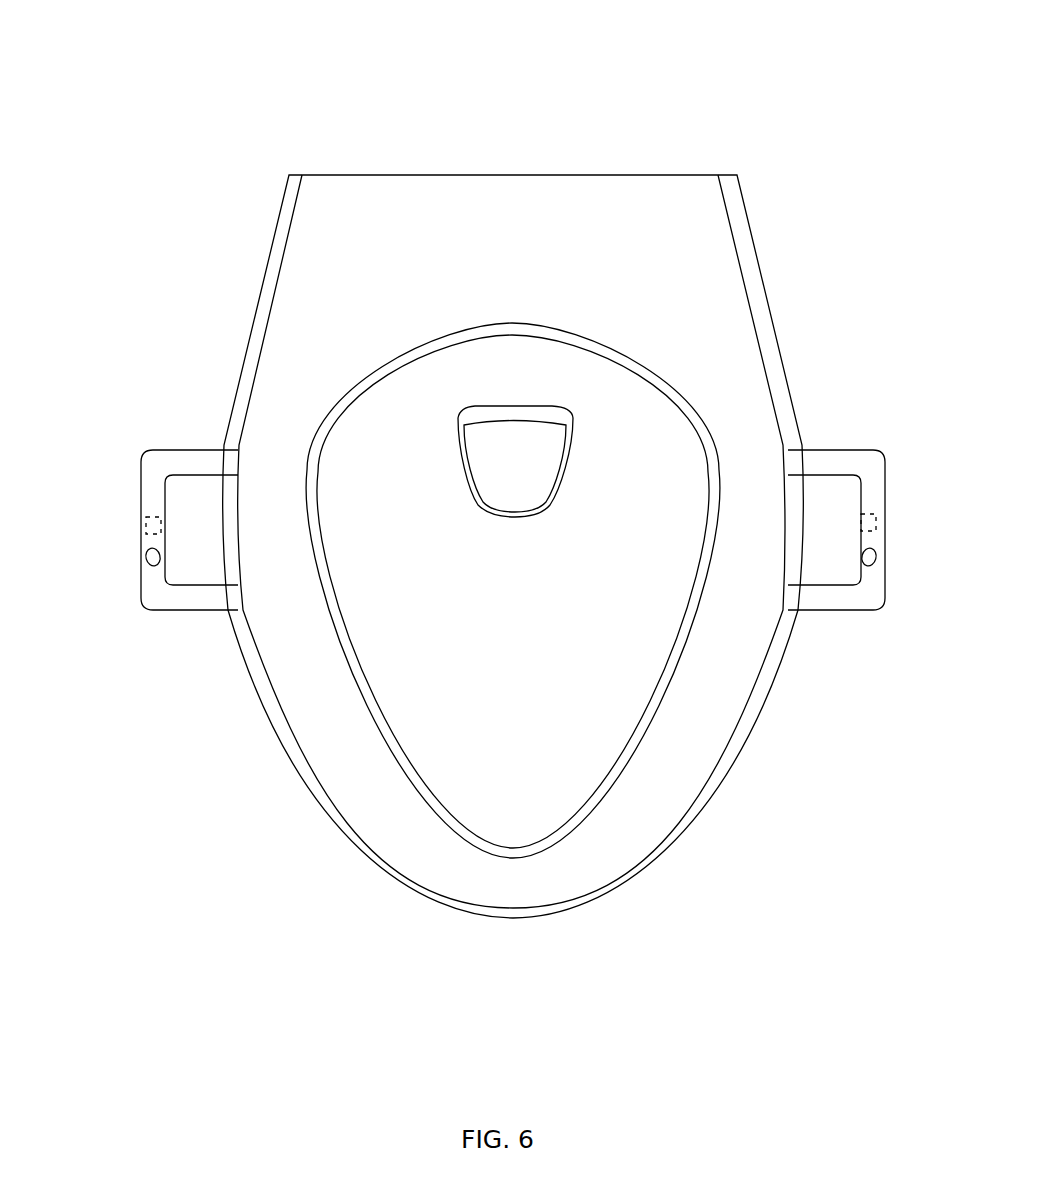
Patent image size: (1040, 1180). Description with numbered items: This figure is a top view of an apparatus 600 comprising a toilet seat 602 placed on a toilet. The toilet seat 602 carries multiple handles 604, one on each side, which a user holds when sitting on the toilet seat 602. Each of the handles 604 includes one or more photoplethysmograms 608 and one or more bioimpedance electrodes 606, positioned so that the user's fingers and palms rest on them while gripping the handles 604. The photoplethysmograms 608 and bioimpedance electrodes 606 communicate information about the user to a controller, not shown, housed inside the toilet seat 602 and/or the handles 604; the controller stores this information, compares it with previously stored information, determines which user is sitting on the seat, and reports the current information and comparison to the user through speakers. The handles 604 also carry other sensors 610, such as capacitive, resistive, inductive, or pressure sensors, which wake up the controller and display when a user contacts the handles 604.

The apparatus 600 is at (188, 70).
The toilet seat 602 is at (517, 202).
The handles 604 is at (172, 458).
The bioimpedance electrodes 606 is at (162, 503).
The photoplethysmograms 608 is at (168, 553).
The other sensors 610 is at (143, 529).